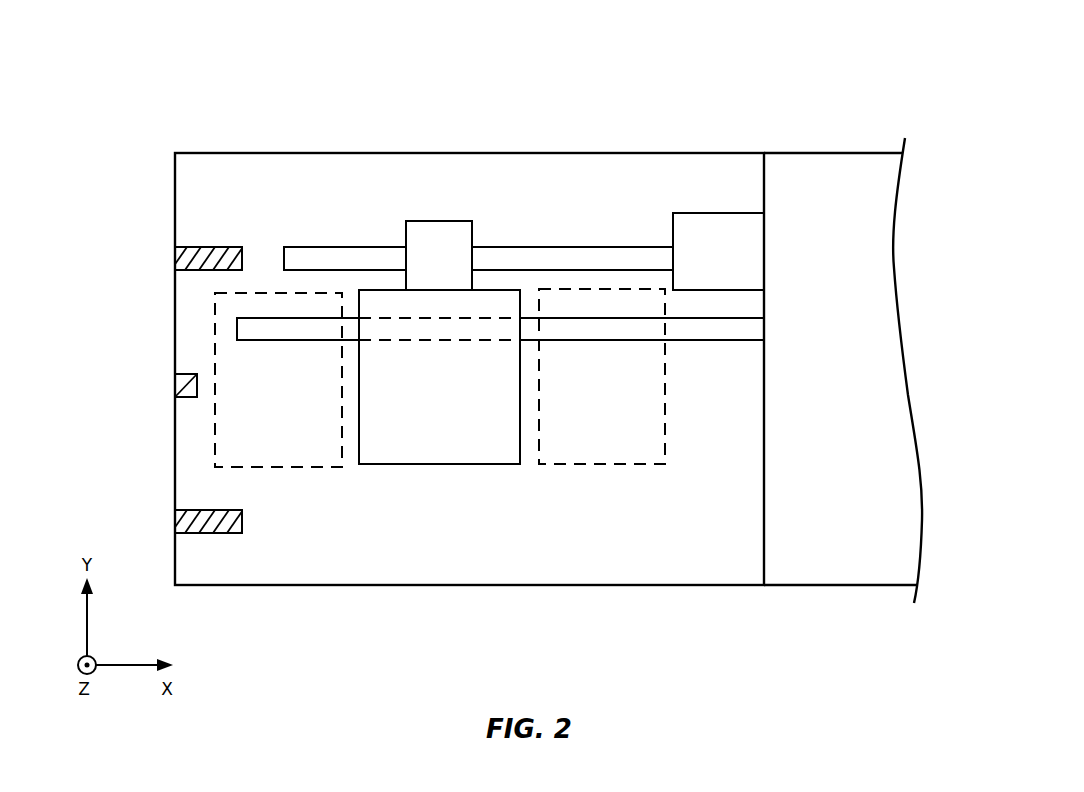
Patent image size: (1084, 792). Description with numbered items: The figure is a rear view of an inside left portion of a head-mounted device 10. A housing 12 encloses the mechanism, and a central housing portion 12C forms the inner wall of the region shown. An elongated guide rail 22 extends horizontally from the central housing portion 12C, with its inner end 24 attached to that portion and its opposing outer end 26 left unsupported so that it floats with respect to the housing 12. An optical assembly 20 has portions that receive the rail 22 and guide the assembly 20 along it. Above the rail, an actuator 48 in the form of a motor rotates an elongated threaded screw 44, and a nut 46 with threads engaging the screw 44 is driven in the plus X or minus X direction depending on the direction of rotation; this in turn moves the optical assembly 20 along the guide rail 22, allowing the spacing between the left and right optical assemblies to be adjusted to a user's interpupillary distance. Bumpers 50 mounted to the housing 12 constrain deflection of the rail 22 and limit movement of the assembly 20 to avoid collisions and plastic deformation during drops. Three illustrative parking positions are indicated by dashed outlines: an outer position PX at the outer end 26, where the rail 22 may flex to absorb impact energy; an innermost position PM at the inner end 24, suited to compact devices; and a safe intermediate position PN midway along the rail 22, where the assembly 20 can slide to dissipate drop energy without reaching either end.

The head-mounted device 10 is at (646, 51).
The housing 12 is at (521, 153).
The central housing portion 12C is at (833, 167).
The optical assembly 20 is at (484, 474).
The guide rail 22 is at (288, 341).
The inner end 24 is at (770, 311).
The outer end 26 is at (230, 325).
The screw 44 is at (341, 248).
The nut 46 is at (441, 233).
The actuator 48 is at (716, 225).
The bumper 50 is at (180, 258).
The outer position PX is at (270, 458).
The intermediate position PN is at (438, 458).
The innermost position PM is at (597, 458).